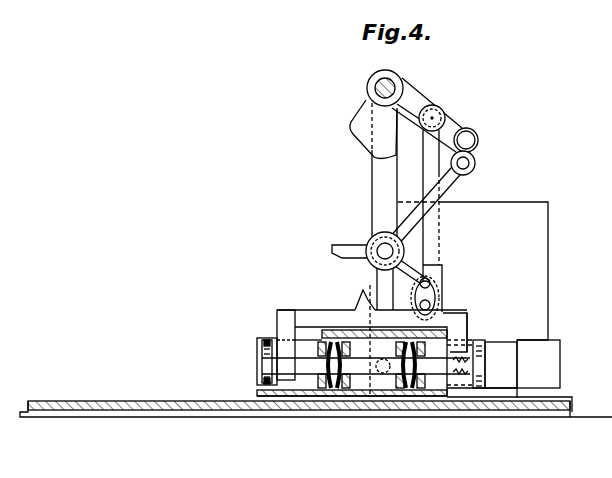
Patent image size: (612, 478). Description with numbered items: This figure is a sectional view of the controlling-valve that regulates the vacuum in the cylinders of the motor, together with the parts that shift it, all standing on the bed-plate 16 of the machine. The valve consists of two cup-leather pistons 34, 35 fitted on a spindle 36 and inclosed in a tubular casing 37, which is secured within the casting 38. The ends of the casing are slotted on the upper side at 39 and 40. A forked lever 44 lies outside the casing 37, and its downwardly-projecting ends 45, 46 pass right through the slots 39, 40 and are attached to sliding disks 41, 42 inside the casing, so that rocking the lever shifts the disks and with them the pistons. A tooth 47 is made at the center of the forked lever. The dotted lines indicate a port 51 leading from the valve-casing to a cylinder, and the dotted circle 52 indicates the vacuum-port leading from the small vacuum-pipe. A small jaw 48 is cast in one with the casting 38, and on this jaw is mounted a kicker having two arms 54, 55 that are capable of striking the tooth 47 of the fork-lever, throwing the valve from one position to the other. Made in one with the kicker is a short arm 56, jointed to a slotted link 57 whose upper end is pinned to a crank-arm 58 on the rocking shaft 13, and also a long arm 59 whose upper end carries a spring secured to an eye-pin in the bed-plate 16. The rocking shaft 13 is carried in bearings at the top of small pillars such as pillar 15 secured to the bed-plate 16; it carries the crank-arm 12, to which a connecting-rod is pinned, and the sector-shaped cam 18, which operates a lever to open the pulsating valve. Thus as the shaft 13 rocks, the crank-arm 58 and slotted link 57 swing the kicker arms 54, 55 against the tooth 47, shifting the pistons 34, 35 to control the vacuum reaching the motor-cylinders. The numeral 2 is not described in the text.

The frame 2 is at (473, 277).
The crank-arm 12 is at (458, 130).
The rocking shaft 13 is at (375, 88).
The pillar 15 is at (372, 185).
The bed-plate 16 is at (92, 401).
The cam 18 is at (364, 126).
The cup-leather piston 34 is at (341, 398).
The cup-leather piston 35 is at (395, 398).
The spindle 36 is at (314, 360).
The tubular casing 37 is at (262, 362).
The casting 38 is at (330, 322).
The slot 39 is at (312, 344).
The slot 40 is at (498, 345).
The sliding disk 41 is at (263, 383).
The sliding disk 42 is at (482, 381).
The forked lever 44 is at (337, 324).
The downwardly-projecting end 45 is at (283, 330).
The downwardly-projecting end 46 is at (460, 333).
The tooth 47 is at (362, 300).
The jaw 48 is at (435, 300).
The port 51 is at (436, 405).
The vacuum-port 52 is at (355, 386).
The kicker arm 54 is at (345, 249).
The kicker arm 55 is at (400, 282).
The short arm 56 is at (430, 285).
The slotted link 57 is at (430, 232).
The crank-arm 58 is at (418, 108).
The long arm 59 is at (456, 176).